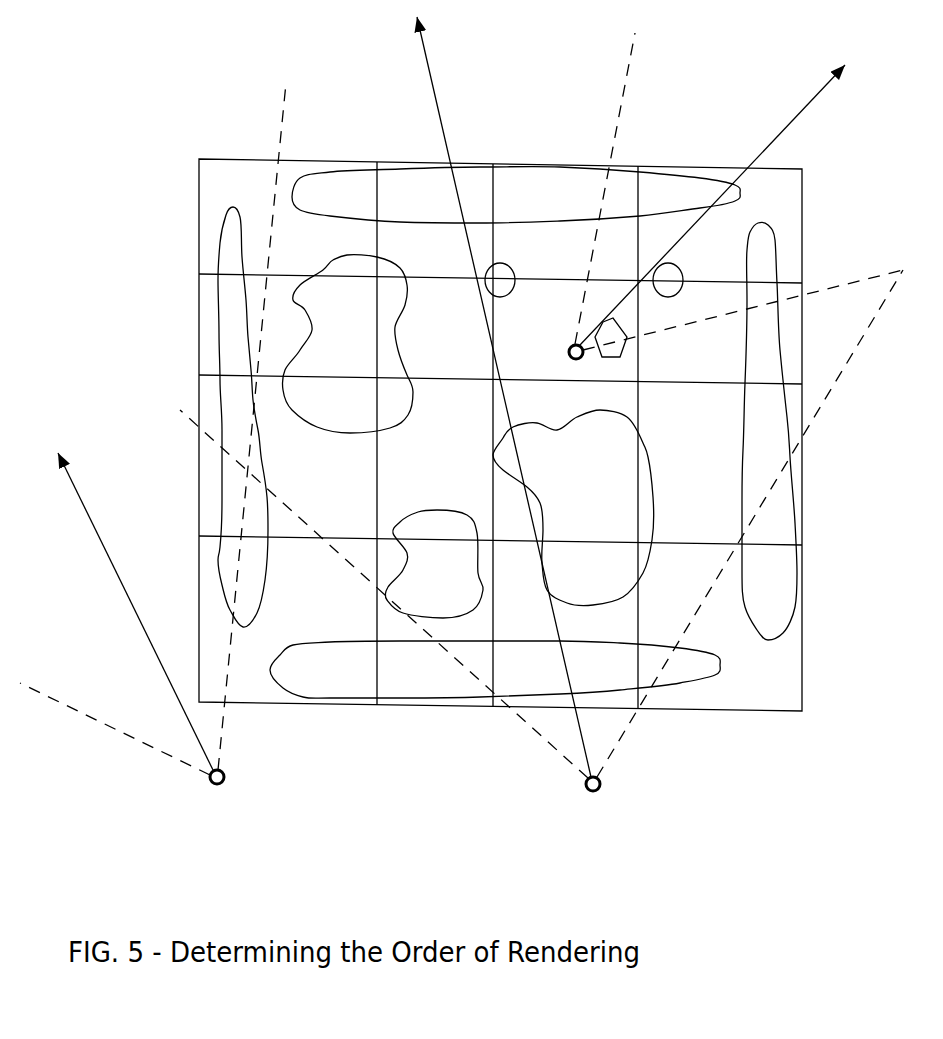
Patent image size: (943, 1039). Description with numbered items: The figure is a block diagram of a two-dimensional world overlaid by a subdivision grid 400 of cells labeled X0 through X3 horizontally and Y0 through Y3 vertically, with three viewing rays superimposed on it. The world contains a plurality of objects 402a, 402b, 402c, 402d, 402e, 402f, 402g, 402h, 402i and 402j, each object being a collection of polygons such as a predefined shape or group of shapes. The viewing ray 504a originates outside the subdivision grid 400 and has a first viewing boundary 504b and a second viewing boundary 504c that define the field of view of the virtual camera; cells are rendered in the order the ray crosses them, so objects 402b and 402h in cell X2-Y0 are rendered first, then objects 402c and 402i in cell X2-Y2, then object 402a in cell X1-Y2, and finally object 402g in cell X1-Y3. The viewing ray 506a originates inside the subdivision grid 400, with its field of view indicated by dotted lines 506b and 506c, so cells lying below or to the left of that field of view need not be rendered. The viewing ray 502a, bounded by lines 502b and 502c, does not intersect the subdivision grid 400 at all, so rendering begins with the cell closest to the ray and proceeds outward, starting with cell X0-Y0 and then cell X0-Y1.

The subdivision grid 400 is at (148, 142).
The object 402a is at (368, 355).
The object 402b is at (596, 520).
The object 402c is at (628, 350).
The object 402d is at (458, 574).
The object 402e is at (265, 564).
The object 402f is at (788, 521).
The object 402g is at (565, 206).
The object 402h is at (546, 680).
The object 402i is at (516, 279).
The object 402j is at (655, 273).
The viewing ray 502a is at (228, 775).
The viewing boundary 502b is at (181, 757).
The viewing boundary 502c is at (218, 732).
The viewing ray 504a is at (602, 780).
The first viewing boundary 504b is at (568, 750).
The second viewing boundary 504c is at (605, 760).
The viewing ray 506a is at (570, 360).
The dotted line 506b is at (577, 334).
The dotted line 506c is at (737, 312).